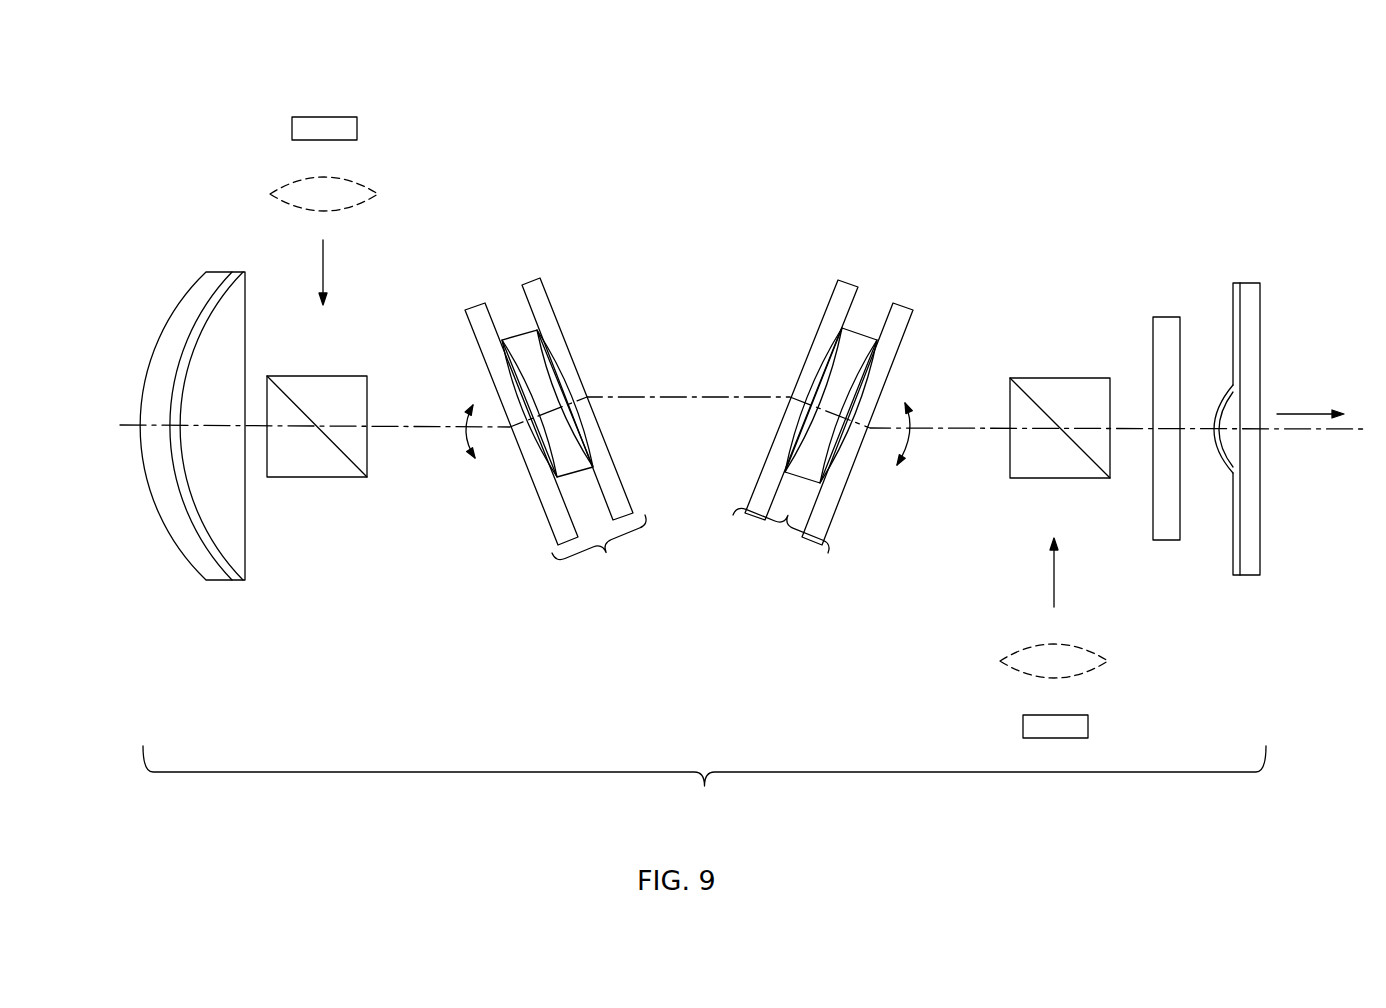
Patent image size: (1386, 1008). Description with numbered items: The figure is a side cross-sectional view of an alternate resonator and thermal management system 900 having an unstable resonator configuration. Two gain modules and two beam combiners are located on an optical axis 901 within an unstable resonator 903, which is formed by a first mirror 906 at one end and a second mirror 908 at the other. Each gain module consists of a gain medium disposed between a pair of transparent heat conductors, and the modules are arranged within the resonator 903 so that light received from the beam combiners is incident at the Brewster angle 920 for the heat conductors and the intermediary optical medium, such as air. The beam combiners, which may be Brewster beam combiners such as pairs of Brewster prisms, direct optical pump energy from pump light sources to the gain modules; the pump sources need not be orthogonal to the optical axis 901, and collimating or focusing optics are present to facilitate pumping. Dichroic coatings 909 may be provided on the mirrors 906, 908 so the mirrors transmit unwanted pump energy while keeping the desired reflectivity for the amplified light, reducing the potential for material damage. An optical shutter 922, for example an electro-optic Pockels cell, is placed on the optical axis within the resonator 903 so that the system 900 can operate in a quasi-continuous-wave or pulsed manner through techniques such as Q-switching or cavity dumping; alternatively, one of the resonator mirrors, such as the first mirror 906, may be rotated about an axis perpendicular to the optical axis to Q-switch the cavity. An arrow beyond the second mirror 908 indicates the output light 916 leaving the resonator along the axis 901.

The resonator and thermal management system 900 is at (1108, 114).
The optical axis 901 is at (210, 424).
The unstable resonator 903 is at (704, 787).
The first mirror 906 is at (158, 343).
The second mirror 908 is at (1260, 517).
The dichroic coating 909 is at (207, 527).
The output beam 916 is at (1300, 414).
The Brewster angle 920 is at (465, 440).
The optical shutter 922 is at (1165, 317).